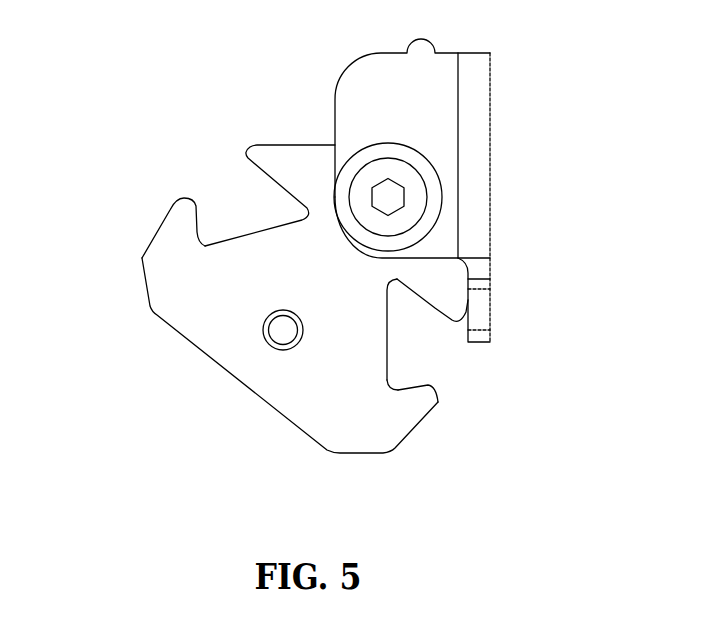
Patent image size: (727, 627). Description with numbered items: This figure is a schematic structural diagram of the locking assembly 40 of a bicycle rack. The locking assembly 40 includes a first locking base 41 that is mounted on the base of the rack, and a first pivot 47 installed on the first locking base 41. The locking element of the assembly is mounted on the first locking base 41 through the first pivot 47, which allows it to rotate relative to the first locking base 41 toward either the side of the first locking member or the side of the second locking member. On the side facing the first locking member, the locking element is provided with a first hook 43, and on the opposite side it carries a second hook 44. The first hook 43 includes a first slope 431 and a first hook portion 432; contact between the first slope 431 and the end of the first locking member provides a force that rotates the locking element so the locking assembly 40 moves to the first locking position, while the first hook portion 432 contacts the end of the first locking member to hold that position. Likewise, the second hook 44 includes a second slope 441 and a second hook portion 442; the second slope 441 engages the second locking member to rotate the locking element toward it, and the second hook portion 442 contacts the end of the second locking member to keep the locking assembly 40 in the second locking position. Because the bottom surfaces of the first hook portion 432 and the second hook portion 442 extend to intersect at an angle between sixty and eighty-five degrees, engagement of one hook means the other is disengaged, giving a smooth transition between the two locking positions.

The locking assembly 40 is at (292, 320).
The first locking base 41 is at (422, 89).
The first hook 43 is at (192, 221).
The first slope 431 is at (263, 177).
The first hook portion 432 is at (197, 232).
The second hook 44 is at (460, 387).
The second slope 441 is at (435, 308).
The second hook portion 442 is at (403, 388).
The first pivot 47 is at (417, 202).